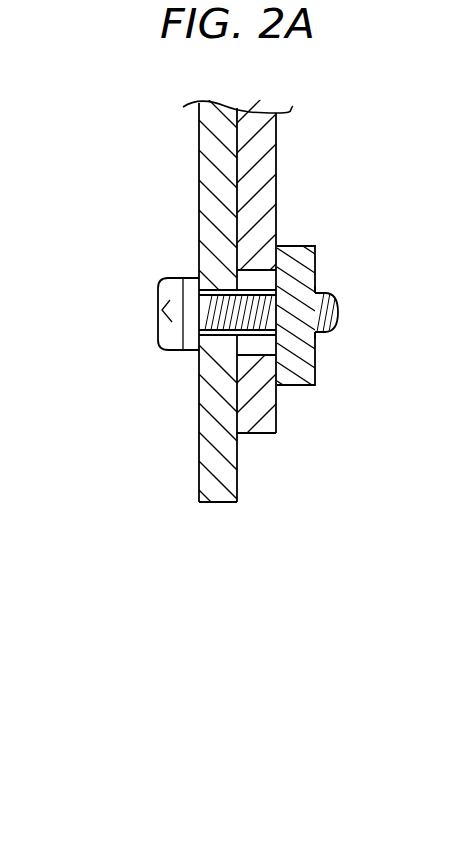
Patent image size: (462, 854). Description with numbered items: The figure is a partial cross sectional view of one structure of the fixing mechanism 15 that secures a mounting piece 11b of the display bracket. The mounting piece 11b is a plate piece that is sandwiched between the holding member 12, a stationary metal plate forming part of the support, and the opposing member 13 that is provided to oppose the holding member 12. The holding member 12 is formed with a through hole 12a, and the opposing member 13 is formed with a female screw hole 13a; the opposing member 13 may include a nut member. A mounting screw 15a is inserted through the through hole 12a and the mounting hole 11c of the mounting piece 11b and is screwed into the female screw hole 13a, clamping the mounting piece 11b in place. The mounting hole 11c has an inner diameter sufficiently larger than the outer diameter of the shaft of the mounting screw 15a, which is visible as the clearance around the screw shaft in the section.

The mounting piece 11b is at (276, 151).
The mounting hole 11c is at (252, 275).
The holding member 12 is at (213, 175).
The through hole 12a is at (208, 336).
The opposing member 13 is at (308, 363).
The female screw hole 13a is at (317, 290).
The fixing mechanism 15 is at (150, 355).
The mounting screw 15a is at (160, 300).